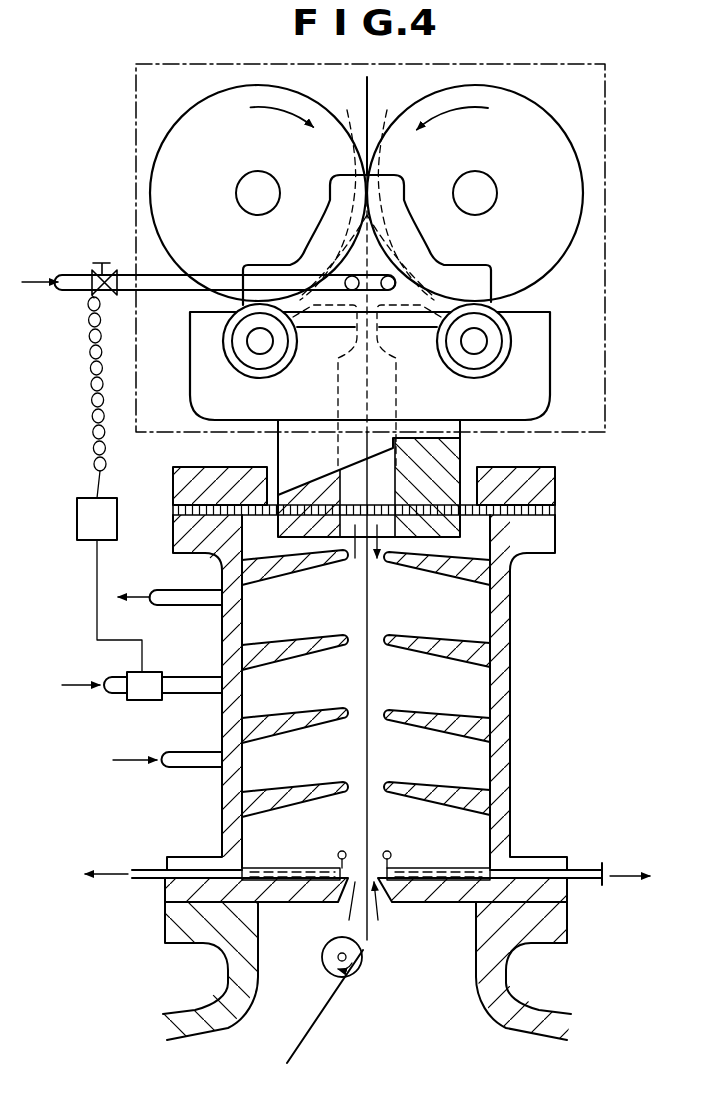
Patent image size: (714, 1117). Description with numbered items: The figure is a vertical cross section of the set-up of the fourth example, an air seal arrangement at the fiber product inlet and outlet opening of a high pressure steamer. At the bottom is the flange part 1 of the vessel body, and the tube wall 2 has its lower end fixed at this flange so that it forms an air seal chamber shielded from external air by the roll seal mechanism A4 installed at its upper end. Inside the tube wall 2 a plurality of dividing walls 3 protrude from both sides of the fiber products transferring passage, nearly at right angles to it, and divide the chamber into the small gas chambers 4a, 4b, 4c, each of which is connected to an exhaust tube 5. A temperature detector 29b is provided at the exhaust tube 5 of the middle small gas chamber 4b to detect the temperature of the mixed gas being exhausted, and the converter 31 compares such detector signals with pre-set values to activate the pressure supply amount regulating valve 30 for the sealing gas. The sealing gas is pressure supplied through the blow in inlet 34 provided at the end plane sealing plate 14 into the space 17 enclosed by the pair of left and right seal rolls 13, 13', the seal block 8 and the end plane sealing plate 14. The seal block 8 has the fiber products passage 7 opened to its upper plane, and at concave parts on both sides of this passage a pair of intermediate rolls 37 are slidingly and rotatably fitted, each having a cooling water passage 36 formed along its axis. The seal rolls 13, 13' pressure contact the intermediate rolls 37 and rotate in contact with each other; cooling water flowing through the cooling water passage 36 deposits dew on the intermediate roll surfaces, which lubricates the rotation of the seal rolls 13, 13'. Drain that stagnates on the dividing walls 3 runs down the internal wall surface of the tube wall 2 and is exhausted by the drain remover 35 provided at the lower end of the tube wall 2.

The flange part 1 is at (565, 916).
The tube wall 2 is at (512, 819).
The dividing walls 3 is at (324, 637).
The sealing gas chamber 4a is at (473, 610).
The small gas chamber 4b is at (475, 690).
The steam chamber 4c is at (475, 767).
The exhaust tube 5 is at (182, 675).
The fiber products passage 7 is at (382, 490).
The seal block 8 is at (550, 387).
The seal roll 13 is at (258, 186).
The seal roll 13' is at (478, 193).
The end plane sealing plate 14 is at (500, 303).
The space 17 is at (367, 254).
The temperature detector 29b is at (143, 700).
The pressure supply amount regulating valve 30 is at (103, 265).
The converter 31 is at (77, 519).
The blow in inlet 34 is at (398, 282).
The drain remover 35 is at (146, 866).
The cooling water passage 36 is at (240, 338).
The intermediate roll 37 is at (227, 351).
The roll seal mechanism A4 is at (605, 290).